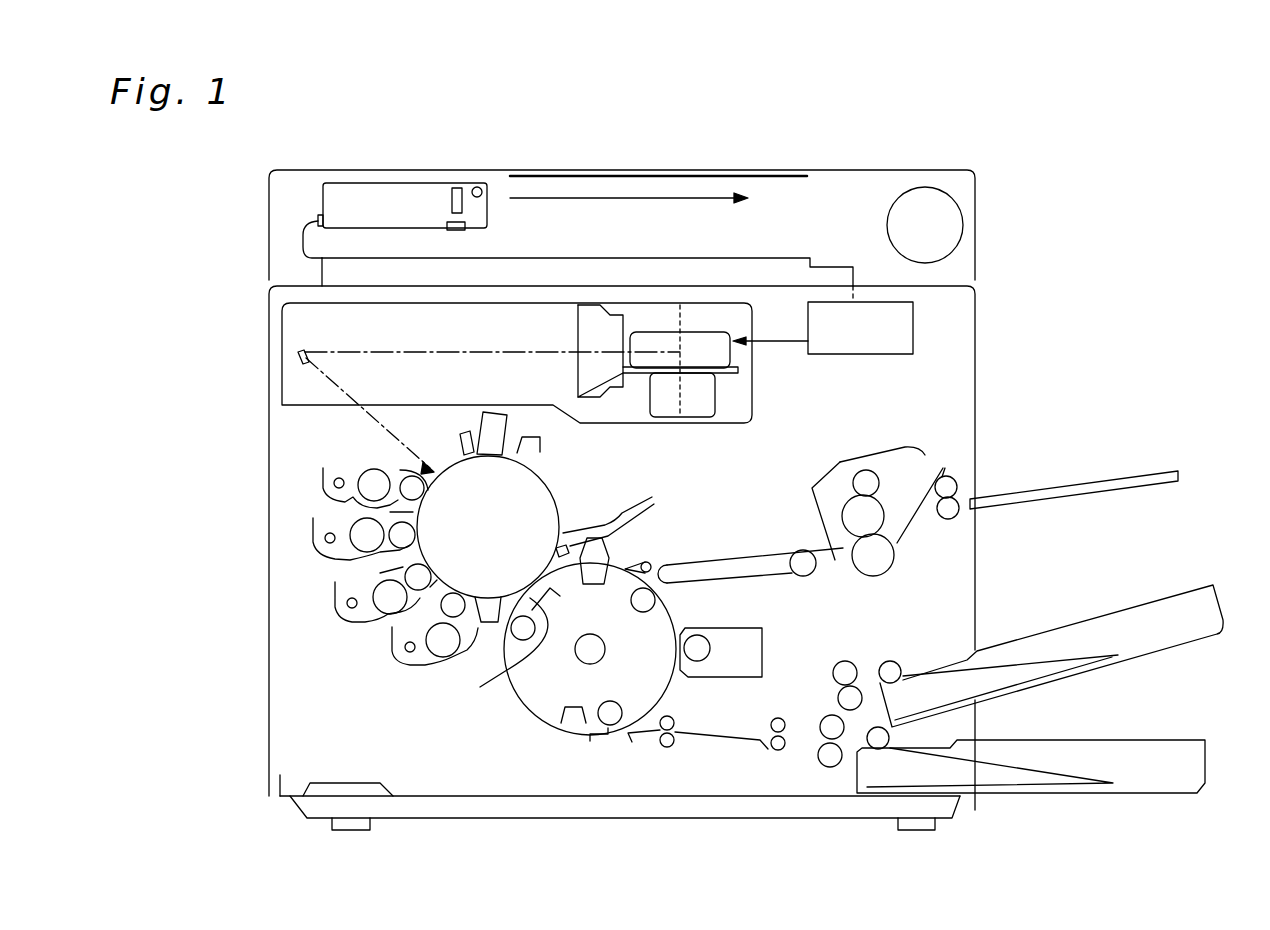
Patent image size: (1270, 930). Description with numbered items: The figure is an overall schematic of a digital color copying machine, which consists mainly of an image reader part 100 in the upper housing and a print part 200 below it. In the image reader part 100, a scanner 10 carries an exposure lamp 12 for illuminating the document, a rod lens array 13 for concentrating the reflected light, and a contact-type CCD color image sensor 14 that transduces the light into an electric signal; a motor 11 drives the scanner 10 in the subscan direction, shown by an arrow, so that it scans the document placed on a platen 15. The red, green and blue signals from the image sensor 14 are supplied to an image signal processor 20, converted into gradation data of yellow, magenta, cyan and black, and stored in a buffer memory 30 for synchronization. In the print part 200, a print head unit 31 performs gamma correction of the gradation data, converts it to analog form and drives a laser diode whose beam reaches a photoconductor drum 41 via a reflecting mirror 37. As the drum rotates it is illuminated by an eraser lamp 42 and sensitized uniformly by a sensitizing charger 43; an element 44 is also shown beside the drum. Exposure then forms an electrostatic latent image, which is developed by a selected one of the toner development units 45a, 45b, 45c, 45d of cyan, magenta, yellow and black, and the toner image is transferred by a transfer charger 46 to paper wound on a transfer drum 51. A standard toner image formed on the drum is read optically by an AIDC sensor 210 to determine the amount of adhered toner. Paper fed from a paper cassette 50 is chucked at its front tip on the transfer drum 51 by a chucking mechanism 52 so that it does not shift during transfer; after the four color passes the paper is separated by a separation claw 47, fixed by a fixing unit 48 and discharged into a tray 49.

The image reader part 100 is at (266, 218).
The print part 200 is at (266, 422).
The scanner 10 is at (386, 174).
The motor 11 is at (963, 220).
The exposure lamp 12 is at (480, 170).
The rod lens array 13 is at (452, 200).
The color image sensor 14 is at (448, 230).
The platen 15 is at (724, 165).
The image signal processor 20 is at (330, 268).
The buffer memory 30 is at (915, 330).
The print head unit 31 is at (740, 352).
The reflecting mirror 37 is at (297, 345).
The photoconductor drum 41 is at (504, 540).
The eraser lamp 42 is at (540, 443).
The sensitizing charger 43 is at (502, 394).
The eraser 44 is at (464, 428).
The toner development unit 45a is at (320, 477).
The toner development unit 45b is at (313, 546).
The toner development unit 45c is at (335, 607).
The toner development unit 45d is at (400, 662).
The transfer charger 46 is at (506, 671).
The separation claw 47 is at (642, 560).
The fixing unit 48 is at (846, 460).
The tray 49 is at (1123, 473).
The paper cassette 50 is at (1147, 660).
The transfer drum 51 is at (547, 727).
The chucking mechanism 52 is at (595, 741).
The AIDC sensor 210 is at (619, 477).